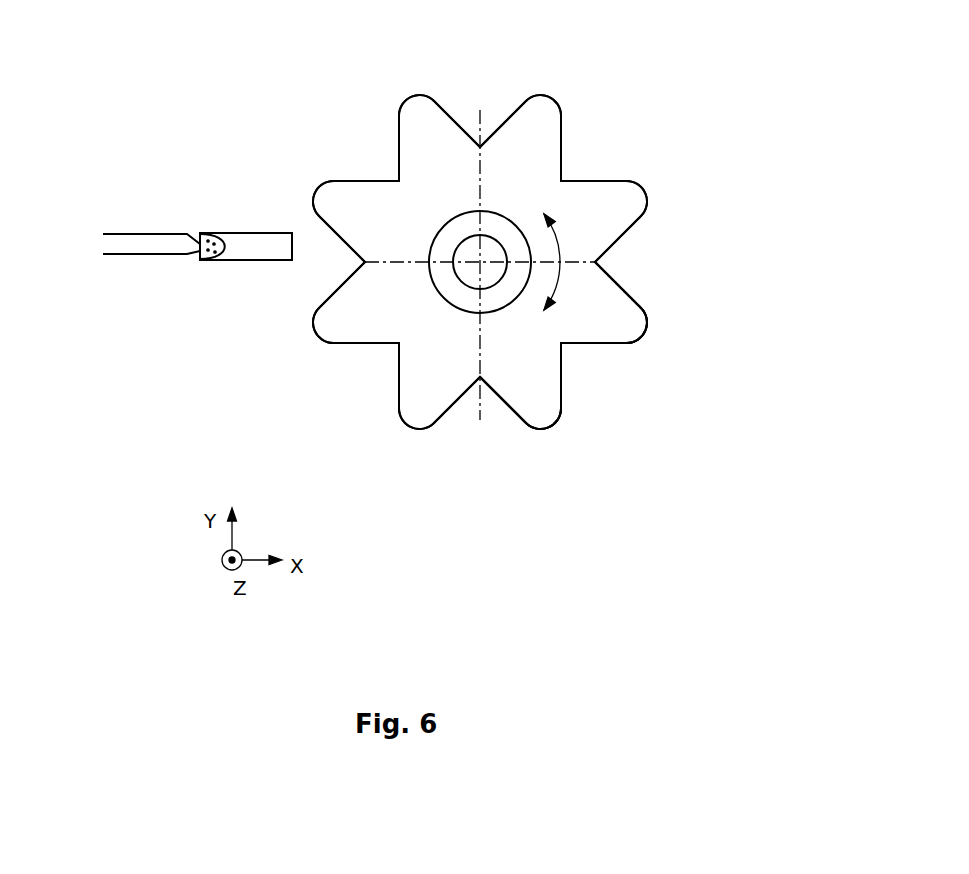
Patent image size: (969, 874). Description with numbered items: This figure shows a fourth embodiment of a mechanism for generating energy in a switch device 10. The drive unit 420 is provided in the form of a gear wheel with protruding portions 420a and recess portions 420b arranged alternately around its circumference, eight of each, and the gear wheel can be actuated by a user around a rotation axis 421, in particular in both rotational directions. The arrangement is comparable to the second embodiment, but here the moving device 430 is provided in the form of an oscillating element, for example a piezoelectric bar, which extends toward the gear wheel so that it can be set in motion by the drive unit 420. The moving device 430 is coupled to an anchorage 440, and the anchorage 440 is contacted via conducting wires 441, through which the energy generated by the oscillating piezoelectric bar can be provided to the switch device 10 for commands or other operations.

The switch device 10 is at (693, 117).
The drive unit 420 is at (617, 320).
The protruding portions 420a is at (560, 430).
The recess portions 420b is at (578, 357).
The rotation axis 421 is at (497, 252).
The moving device 430 is at (273, 233).
The anchorage 440 is at (203, 225).
The conducting wires 441 is at (182, 257).